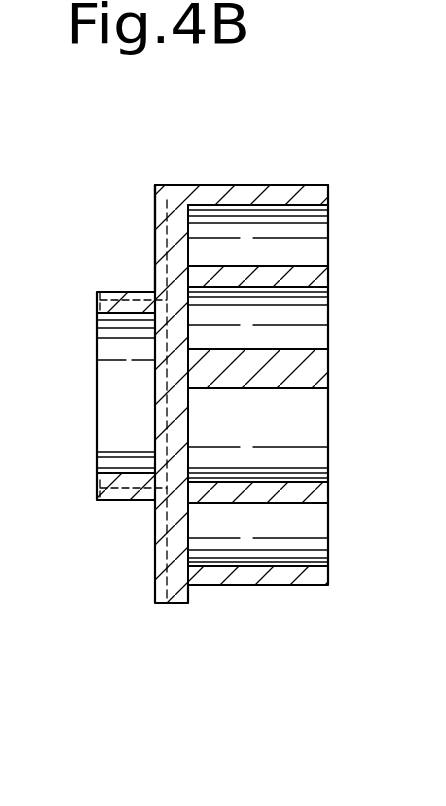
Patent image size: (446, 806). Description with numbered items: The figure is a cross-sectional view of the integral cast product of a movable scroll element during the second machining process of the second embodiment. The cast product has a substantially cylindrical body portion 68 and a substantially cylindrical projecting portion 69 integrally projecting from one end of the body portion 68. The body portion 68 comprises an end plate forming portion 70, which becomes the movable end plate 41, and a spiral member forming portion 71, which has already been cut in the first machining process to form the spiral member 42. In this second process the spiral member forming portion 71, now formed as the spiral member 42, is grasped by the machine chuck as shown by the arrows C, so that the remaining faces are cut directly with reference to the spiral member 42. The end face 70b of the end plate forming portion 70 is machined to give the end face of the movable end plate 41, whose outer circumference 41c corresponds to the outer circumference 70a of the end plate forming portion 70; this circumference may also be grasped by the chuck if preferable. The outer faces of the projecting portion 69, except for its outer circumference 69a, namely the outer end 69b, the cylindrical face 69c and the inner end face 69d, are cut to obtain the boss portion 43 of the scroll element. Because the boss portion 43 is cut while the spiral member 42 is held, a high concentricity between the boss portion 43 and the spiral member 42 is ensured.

The body portion 68 is at (211, 424).
The end plate forming portion 70 is at (175, 603).
The movable end plate 41 is at (241, 450).
The spiral member forming portion 71 is at (303, 578).
The spiral member 42 is at (278, 460).
The outer circumference of the end plate forming portion 70a is at (178, 185).
The outer circumference of the movable end plate 41c is at (183, 338).
The end face of the end plate forming portion 70b is at (153, 207).
The projecting portion 69 is at (96, 407).
The boss portion 43 is at (96, 390).
The outer circumference of the projecting portion 69a is at (127, 503).
The outer end of the projecting portion 69b is at (97, 488).
The cylindrical face of the projecting portion 69c is at (123, 470).
The inner end face of the projecting portion 69d is at (157, 410).
The arrows indicating chuck grasping C is at (263, 185).